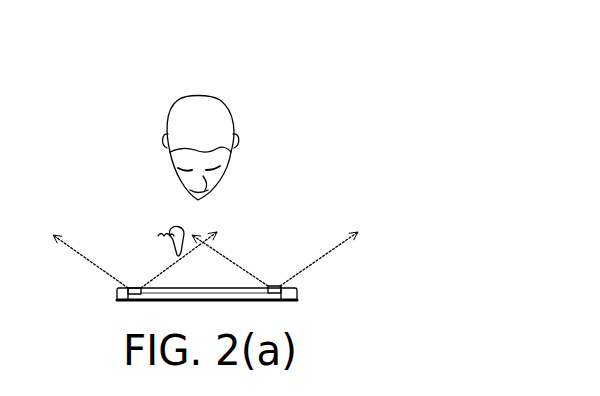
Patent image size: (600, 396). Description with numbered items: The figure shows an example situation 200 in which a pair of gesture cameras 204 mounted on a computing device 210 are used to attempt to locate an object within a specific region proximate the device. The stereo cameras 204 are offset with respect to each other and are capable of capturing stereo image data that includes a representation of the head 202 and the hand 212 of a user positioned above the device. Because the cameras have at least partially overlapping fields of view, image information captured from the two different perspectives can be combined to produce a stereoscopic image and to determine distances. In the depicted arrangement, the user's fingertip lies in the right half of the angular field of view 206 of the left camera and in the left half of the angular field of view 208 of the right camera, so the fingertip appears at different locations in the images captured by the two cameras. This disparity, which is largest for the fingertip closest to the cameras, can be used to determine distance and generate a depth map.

The situation 200 is at (507, 87).
The head 202 is at (197, 95).
The gesture cameras 204 is at (117, 300).
The angular field of view of the left camera 206 is at (152, 251).
The angular field of view of the right camera 208 is at (288, 257).
The computing device 210 is at (297, 292).
The hand 212 is at (158, 230).